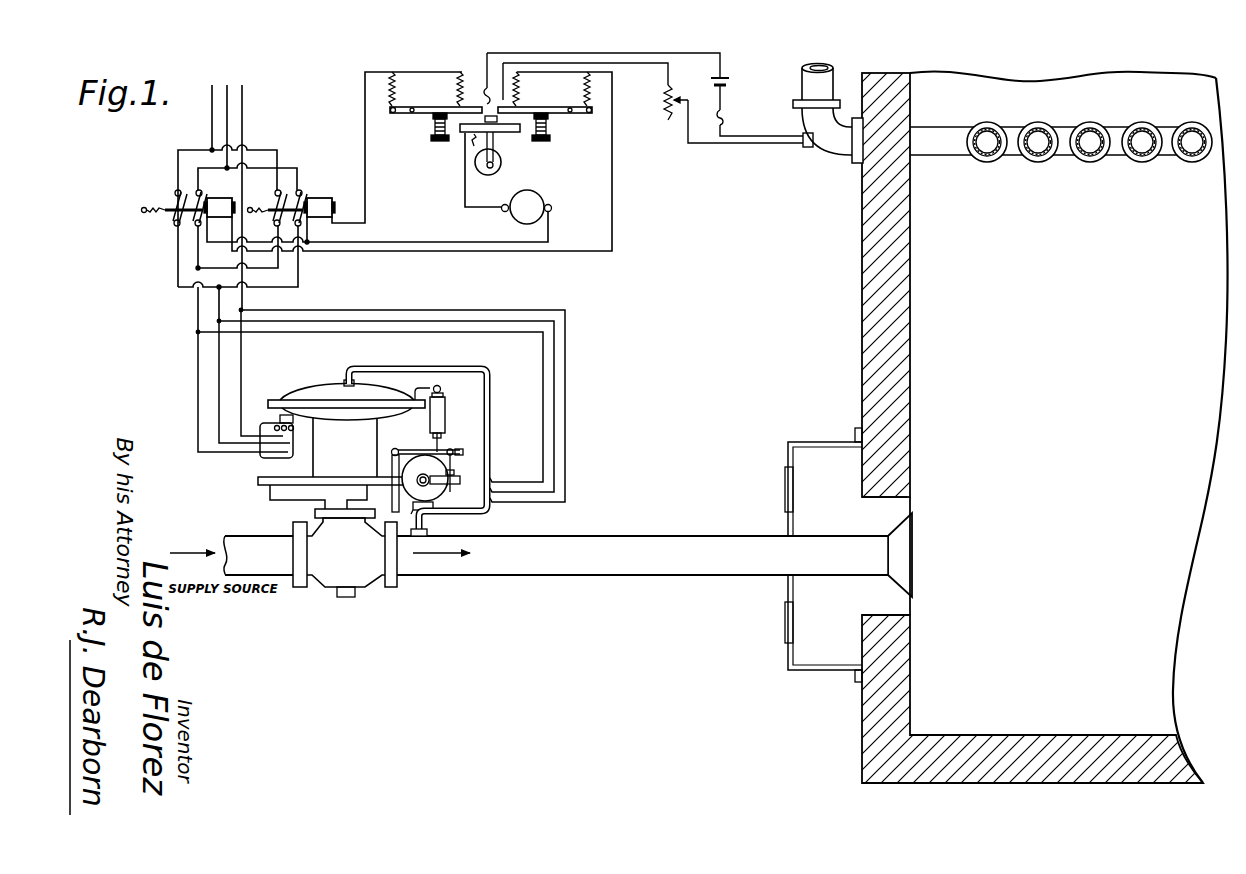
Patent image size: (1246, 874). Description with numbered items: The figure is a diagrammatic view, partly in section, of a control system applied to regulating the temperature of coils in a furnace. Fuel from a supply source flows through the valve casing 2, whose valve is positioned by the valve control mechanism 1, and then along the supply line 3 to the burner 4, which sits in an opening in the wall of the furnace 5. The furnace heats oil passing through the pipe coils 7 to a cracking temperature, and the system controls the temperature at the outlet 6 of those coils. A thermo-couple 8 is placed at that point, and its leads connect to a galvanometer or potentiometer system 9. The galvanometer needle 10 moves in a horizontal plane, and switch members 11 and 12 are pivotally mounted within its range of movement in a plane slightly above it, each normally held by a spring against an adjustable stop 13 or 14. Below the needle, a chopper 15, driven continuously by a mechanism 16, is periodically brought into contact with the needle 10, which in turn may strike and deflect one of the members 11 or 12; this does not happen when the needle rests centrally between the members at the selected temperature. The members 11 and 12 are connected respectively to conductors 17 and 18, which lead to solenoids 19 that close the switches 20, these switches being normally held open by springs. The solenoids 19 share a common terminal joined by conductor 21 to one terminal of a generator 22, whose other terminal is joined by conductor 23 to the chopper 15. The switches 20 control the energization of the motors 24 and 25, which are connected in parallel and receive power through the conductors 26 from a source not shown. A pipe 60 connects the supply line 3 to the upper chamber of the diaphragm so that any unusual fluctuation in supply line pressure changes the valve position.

The valve control mechanism 1 is at (332, 386).
The valve casing 2 is at (357, 576).
The supply line 3 is at (665, 556).
The burner 4 is at (904, 582).
The furnace 5 is at (990, 340).
The outlet 6 is at (830, 140).
The pipe coils 7 is at (1090, 149).
The thermo-couple 8 is at (803, 146).
The galvanometer or potentiometer system 9 is at (712, 78).
The galvanometer needle 10 is at (494, 120).
The switch member 11 is at (556, 106).
The switch member 12 is at (424, 106).
The adjustable stop 13 is at (546, 141).
The adjustable stop 14 is at (432, 140).
The chopper 15 is at (463, 134).
The chopper operating mechanism 16 is at (498, 168).
The conductor 17 is at (612, 222).
The conductor 18 is at (366, 180).
The solenoids 19 is at (218, 198).
The switches 20 is at (170, 195).
The conductor 21 is at (400, 242).
The generator 22 is at (532, 200).
The conductor 23 is at (470, 210).
The motor 24 is at (262, 457).
The motor 25 is at (427, 470).
The conductors 26 is at (238, 112).
The pipe 60 is at (485, 423).